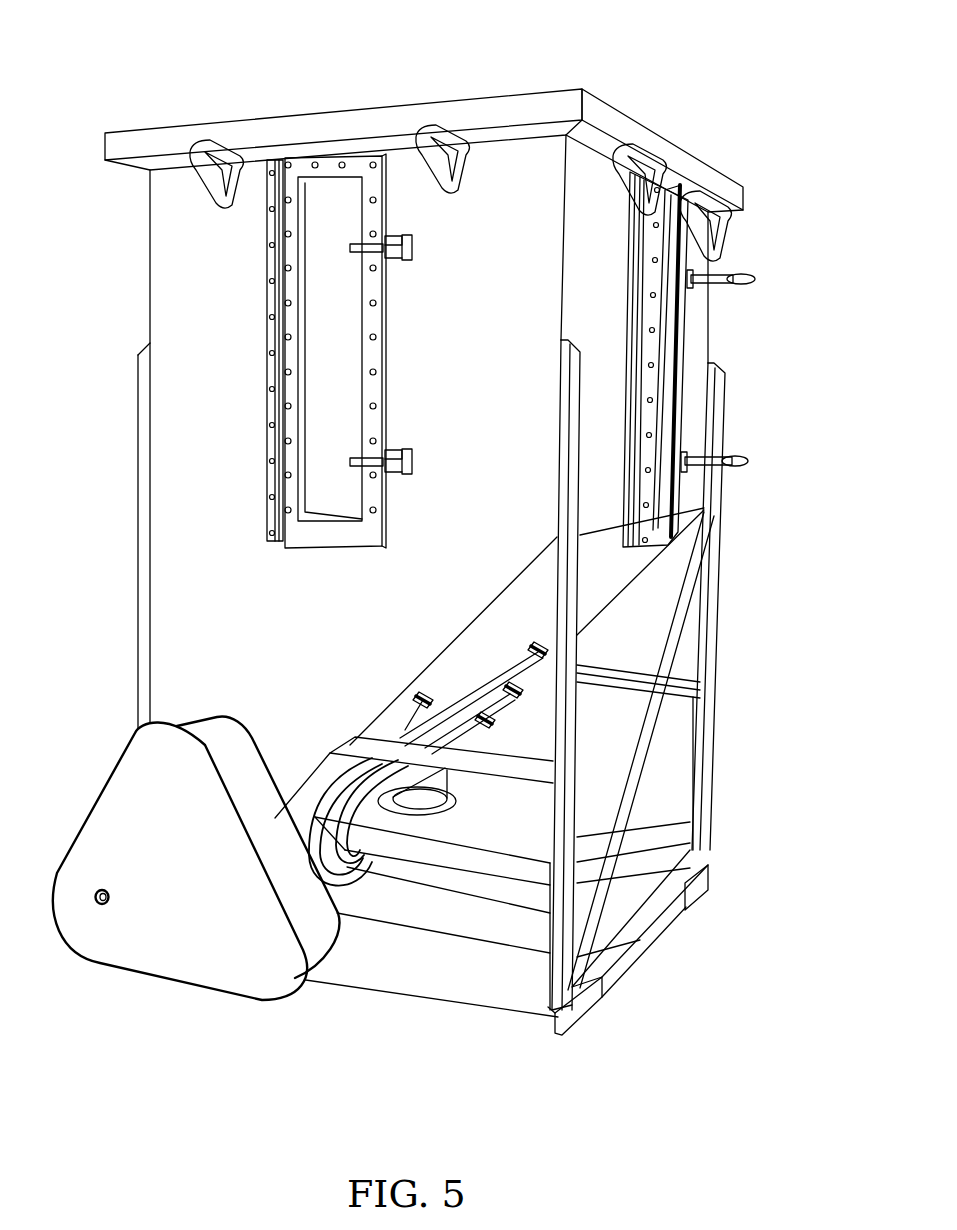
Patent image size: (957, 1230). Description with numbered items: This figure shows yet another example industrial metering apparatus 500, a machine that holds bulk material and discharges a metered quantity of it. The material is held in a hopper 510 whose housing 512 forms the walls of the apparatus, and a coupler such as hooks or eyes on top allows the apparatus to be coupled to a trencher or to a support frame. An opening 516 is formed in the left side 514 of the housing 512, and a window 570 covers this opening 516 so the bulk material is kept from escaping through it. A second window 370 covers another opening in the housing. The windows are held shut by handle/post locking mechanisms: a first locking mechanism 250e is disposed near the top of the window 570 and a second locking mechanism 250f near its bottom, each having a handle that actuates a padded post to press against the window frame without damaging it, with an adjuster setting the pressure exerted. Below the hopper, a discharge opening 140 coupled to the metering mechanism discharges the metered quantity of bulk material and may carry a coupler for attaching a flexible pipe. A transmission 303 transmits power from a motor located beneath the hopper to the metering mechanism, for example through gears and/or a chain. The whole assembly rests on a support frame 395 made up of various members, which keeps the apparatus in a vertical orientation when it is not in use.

The industrial metering apparatus 500 is at (190, 60).
The cabinet enclosure 510 is at (122, 650).
The housing 512 is at (160, 300).
The left side 514 is at (177, 408).
The window 570 is at (418, 325).
The opening 516 is at (355, 377).
The handle/post locking mechanism 250e is at (435, 240).
The handle/post locking mechanism 250f is at (435, 450).
The window 370 is at (697, 333).
The discharge opening 140 is at (427, 790).
The transmission 303 is at (317, 937).
The support frame 395 is at (427, 950).